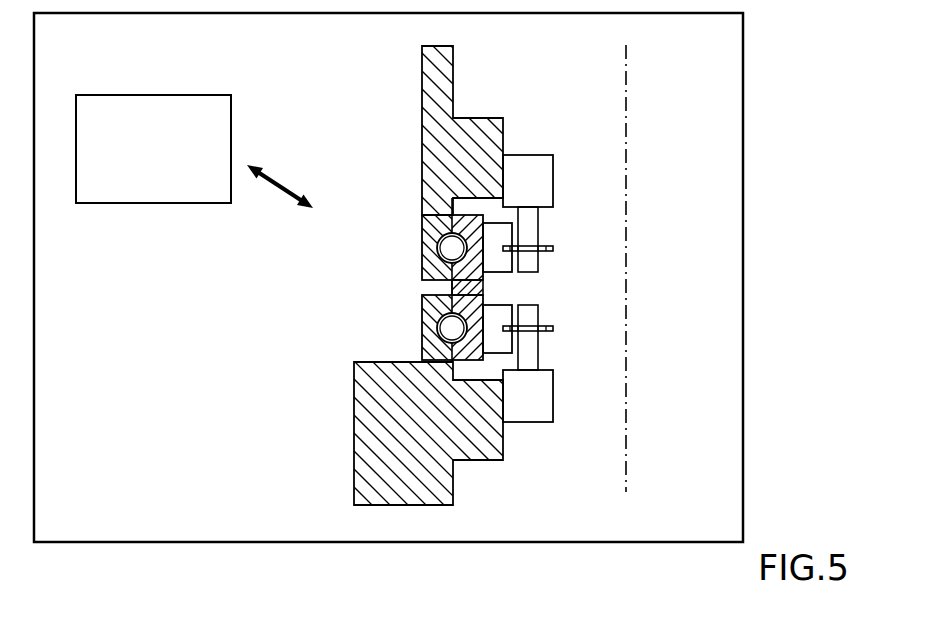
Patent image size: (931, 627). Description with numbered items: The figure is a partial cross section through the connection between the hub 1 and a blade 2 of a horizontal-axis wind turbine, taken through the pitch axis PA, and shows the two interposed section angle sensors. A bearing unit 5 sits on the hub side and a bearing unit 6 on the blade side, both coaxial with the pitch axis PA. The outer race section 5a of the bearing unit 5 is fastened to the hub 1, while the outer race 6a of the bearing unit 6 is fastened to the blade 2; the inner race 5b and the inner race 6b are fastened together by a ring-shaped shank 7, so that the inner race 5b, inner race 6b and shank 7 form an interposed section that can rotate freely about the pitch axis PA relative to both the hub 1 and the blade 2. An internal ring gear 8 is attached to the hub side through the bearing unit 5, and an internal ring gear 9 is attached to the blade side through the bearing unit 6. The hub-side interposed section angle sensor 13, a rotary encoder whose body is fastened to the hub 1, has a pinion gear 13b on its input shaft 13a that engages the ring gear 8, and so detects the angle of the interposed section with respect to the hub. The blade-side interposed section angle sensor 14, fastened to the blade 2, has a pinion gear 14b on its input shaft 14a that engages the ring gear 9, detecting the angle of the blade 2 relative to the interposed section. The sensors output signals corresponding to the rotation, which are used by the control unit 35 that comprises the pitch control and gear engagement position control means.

The hub 1 is at (383, 483).
The blade 2 is at (430, 122).
The bearing unit 5 is at (420, 366).
The outer race section 5a is at (433, 308).
The inner race 5b is at (453, 352).
The bearing unit 6 is at (419, 208).
The outer race 6a is at (432, 263).
The inner race 6b is at (452, 215).
The shank 7 is at (457, 288).
The internal ring gear 8 is at (538, 324).
The internal ring gear 9 is at (539, 254).
The hub-side interposed section angle sensor 13 is at (530, 422).
The input shaft 13a is at (532, 352).
The pinion gear 13b is at (553, 330).
The blade-side interposed section angle sensor 14 is at (527, 158).
The input shaft 14a is at (533, 225).
The pinion gear 14b is at (545, 247).
The control unit 35 is at (190, 93).
The pitch axis PA is at (627, 128).